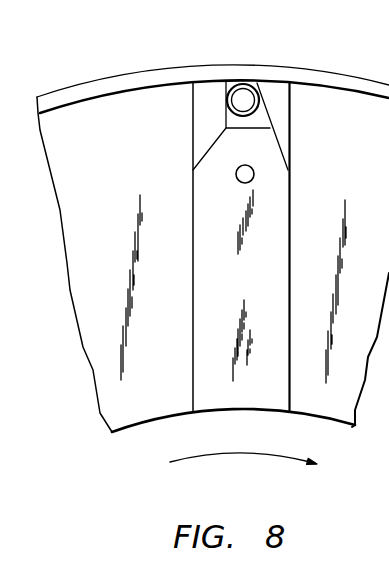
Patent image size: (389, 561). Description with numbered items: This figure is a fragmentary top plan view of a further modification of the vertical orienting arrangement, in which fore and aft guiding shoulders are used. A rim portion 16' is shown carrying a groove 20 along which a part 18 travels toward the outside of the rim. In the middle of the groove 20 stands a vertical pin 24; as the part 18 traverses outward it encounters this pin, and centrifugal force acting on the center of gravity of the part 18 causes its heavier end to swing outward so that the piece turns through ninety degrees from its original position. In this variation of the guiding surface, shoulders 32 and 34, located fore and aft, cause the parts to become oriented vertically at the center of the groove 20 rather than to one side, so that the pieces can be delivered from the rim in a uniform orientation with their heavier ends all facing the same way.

The outer rim 16' is at (213, 67).
The part 18 is at (245, 102).
The groove 20 is at (254, 284).
The vertical pin 24 is at (254, 170).
The shoulder 32 is at (283, 129).
The shoulder 34 is at (193, 143).